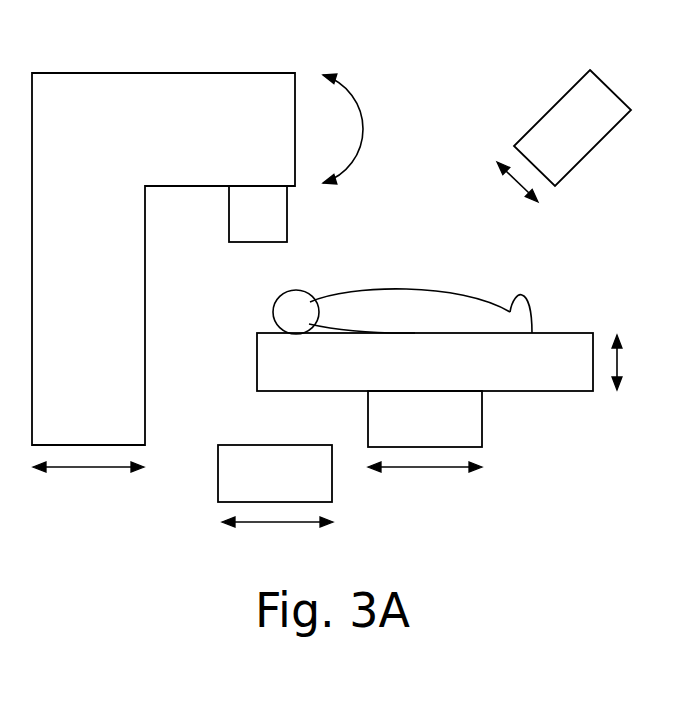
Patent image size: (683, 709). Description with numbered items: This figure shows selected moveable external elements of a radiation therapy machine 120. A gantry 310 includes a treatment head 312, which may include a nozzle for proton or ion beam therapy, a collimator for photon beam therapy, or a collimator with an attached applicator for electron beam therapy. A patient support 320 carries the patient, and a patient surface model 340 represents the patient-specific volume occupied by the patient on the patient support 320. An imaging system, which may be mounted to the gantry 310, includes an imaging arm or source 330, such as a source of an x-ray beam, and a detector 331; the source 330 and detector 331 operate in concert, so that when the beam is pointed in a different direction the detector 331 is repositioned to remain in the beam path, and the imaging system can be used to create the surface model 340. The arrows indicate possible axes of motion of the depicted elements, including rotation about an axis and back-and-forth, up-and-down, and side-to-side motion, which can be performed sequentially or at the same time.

The radiation therapy machine 120 is at (427, 47).
The gantry 310 is at (88, 116).
The treatment head 312 is at (239, 223).
The patient support 320 is at (406, 360).
The imaging arm or source 330 is at (559, 135).
The detector 331 is at (256, 483).
The patient surface model 340 is at (383, 320).